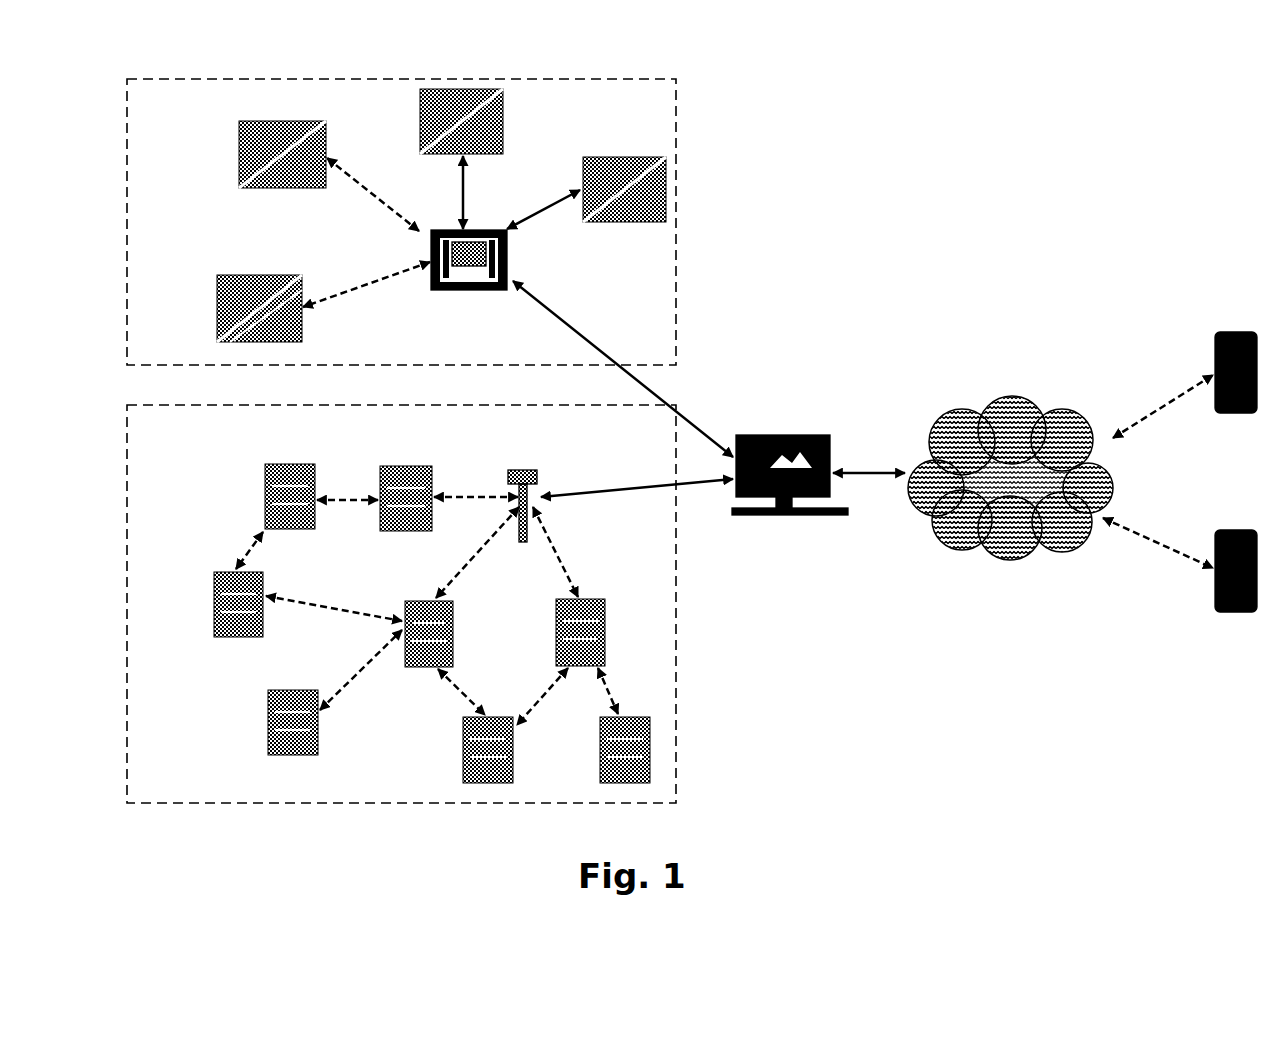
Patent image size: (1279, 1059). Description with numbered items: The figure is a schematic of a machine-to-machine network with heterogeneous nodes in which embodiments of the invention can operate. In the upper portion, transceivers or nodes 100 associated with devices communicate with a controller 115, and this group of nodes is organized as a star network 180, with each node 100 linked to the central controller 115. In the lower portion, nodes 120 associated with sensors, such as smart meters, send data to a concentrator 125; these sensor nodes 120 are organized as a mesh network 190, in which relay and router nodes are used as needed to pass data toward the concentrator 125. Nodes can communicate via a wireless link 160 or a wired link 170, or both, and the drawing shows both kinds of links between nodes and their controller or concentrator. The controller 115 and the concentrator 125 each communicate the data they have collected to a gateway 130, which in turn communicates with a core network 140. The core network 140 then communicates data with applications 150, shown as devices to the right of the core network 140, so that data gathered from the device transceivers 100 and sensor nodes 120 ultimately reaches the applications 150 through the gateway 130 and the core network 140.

The transceivers (nodes) 100 is at (250, 268).
The controller 115 is at (469, 298).
The nodes 120 is at (263, 720).
The concentrator 125 is at (543, 482).
The gateway 130 is at (783, 425).
The core network 140 is at (1018, 402).
The applications 150 is at (1237, 332).
The wireless link 160 is at (548, 527).
The wired link 170 is at (547, 215).
The star network 180 is at (495, 70).
The mesh network 190 is at (347, 805).